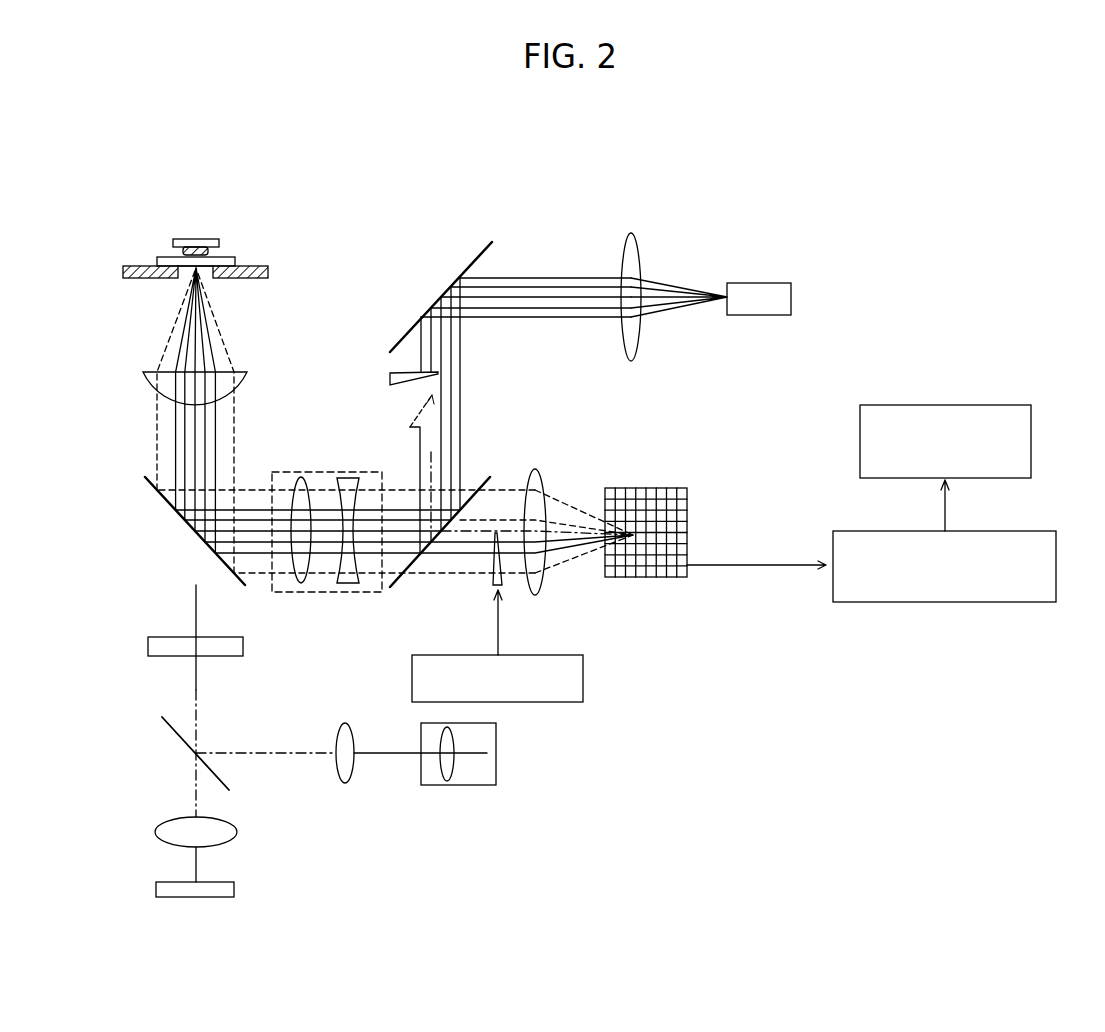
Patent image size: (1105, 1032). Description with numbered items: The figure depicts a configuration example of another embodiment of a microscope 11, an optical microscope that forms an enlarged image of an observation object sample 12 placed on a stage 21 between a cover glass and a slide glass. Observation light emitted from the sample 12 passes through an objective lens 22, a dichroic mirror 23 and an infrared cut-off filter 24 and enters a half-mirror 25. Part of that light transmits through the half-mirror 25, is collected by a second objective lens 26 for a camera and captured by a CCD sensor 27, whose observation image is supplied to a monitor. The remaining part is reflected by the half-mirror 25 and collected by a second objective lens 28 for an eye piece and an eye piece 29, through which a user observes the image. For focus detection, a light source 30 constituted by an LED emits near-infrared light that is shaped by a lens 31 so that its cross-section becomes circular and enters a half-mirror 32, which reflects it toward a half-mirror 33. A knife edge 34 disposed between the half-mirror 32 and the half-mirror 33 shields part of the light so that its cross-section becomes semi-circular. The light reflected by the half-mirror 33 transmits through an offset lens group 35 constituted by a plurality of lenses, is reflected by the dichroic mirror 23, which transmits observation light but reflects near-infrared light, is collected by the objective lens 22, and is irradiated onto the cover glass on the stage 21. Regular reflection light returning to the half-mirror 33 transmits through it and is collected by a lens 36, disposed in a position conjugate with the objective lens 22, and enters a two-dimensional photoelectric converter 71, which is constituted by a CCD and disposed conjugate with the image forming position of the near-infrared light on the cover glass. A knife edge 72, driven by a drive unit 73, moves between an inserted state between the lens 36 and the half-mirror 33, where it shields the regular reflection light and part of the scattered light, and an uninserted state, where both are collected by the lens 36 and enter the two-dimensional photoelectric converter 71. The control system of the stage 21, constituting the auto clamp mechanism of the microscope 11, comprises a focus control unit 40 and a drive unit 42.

The microscope 11 is at (613, 826).
The sample 12 is at (182, 252).
The stage 21 is at (123, 272).
The objective lens 22 is at (147, 380).
The dichroic mirror 23 is at (161, 497).
The infrared cut-off filter 24 is at (148, 647).
The half-mirror 25 is at (178, 736).
The second objective lens (for a camera) 26 is at (154, 832).
The CCD sensor 27 is at (156, 886).
The second objective lens (for an eye piece) 28 is at (345, 784).
The eye piece 29 is at (459, 786).
The light source 30 is at (761, 283).
The lens 31 is at (632, 233).
The half-mirror 32 is at (402, 334).
The half-mirror 33 is at (394, 584).
The knife edge 34 is at (390, 378).
The offset lens group 35 is at (325, 592).
The lens 36 is at (536, 470).
The focus control unit 40 is at (945, 602).
The drive unit 42 is at (1032, 443).
The two-dimensional photoelectric converter 71 is at (646, 488).
The knife edge 72 is at (503, 580).
The drive unit 73 is at (585, 680).